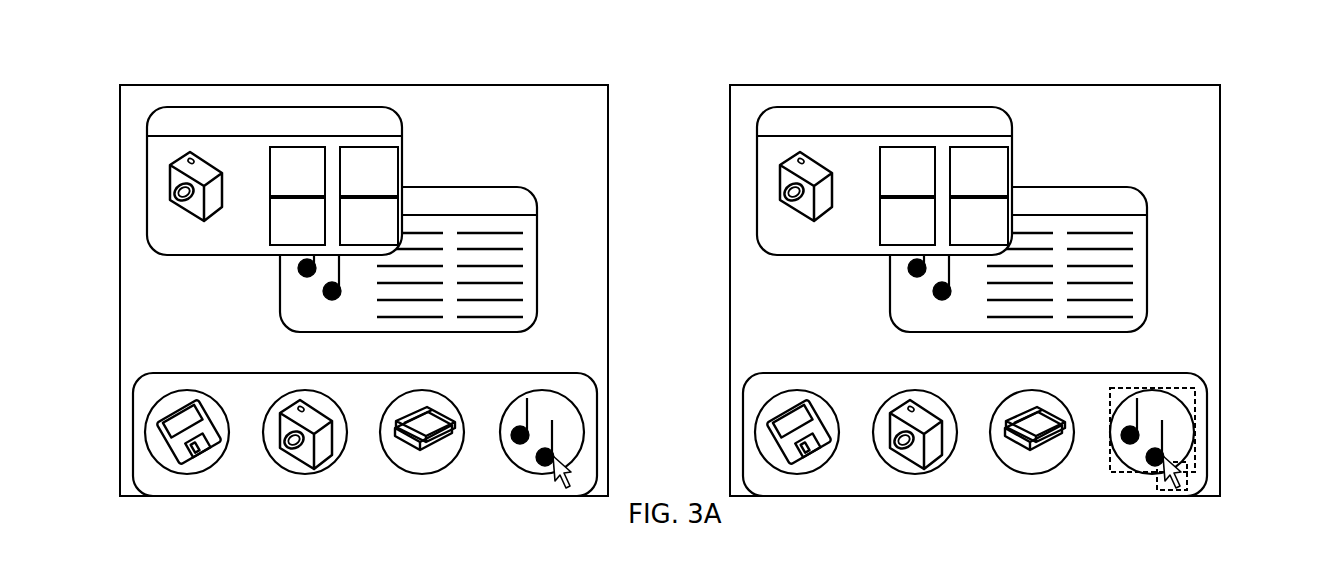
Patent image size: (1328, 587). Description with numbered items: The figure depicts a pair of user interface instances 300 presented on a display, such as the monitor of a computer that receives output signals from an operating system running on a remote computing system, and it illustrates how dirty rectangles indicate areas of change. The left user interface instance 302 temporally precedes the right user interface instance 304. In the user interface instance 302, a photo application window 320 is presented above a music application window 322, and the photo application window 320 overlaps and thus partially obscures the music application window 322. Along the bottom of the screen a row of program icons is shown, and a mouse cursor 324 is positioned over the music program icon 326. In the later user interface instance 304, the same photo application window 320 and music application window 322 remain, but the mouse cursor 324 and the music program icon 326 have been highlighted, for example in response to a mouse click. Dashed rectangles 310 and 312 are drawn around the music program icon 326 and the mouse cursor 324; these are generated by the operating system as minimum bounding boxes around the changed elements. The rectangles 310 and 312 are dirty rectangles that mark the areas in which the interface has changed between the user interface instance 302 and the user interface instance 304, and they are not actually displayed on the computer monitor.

The user interface display sequence 300 is at (76, 136).
The user interface instance 302 is at (121, 291).
The user interface instance 304 is at (731, 291).
The rectangle 310 is at (1195, 410).
The rectangle 312 is at (1187, 484).
The photo application window 320 is at (198, 255).
The music application window 322 is at (452, 187).
The mouse cursor 324 is at (553, 483).
The music program icon 326 is at (510, 402).